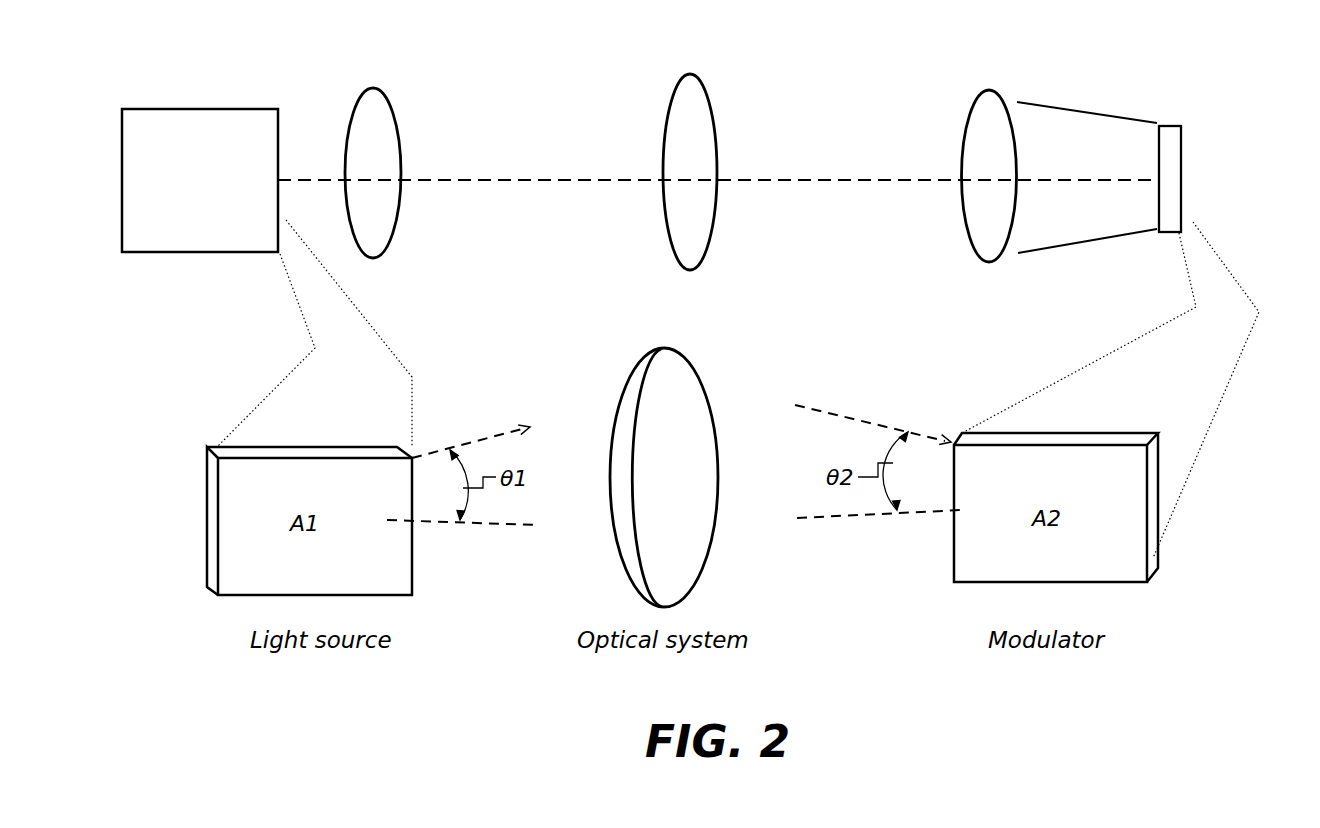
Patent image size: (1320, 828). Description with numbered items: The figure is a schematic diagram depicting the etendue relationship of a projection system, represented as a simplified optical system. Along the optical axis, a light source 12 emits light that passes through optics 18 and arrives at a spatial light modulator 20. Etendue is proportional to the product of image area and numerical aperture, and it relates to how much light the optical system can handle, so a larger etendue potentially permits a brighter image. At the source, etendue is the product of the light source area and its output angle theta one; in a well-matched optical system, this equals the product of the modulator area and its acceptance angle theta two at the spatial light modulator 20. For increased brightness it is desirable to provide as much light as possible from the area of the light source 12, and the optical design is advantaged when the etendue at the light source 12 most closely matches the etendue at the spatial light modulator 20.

The light source 12 is at (177, 109).
The optics 18 is at (662, 62).
The spatial light modulator 20 is at (1181, 139).